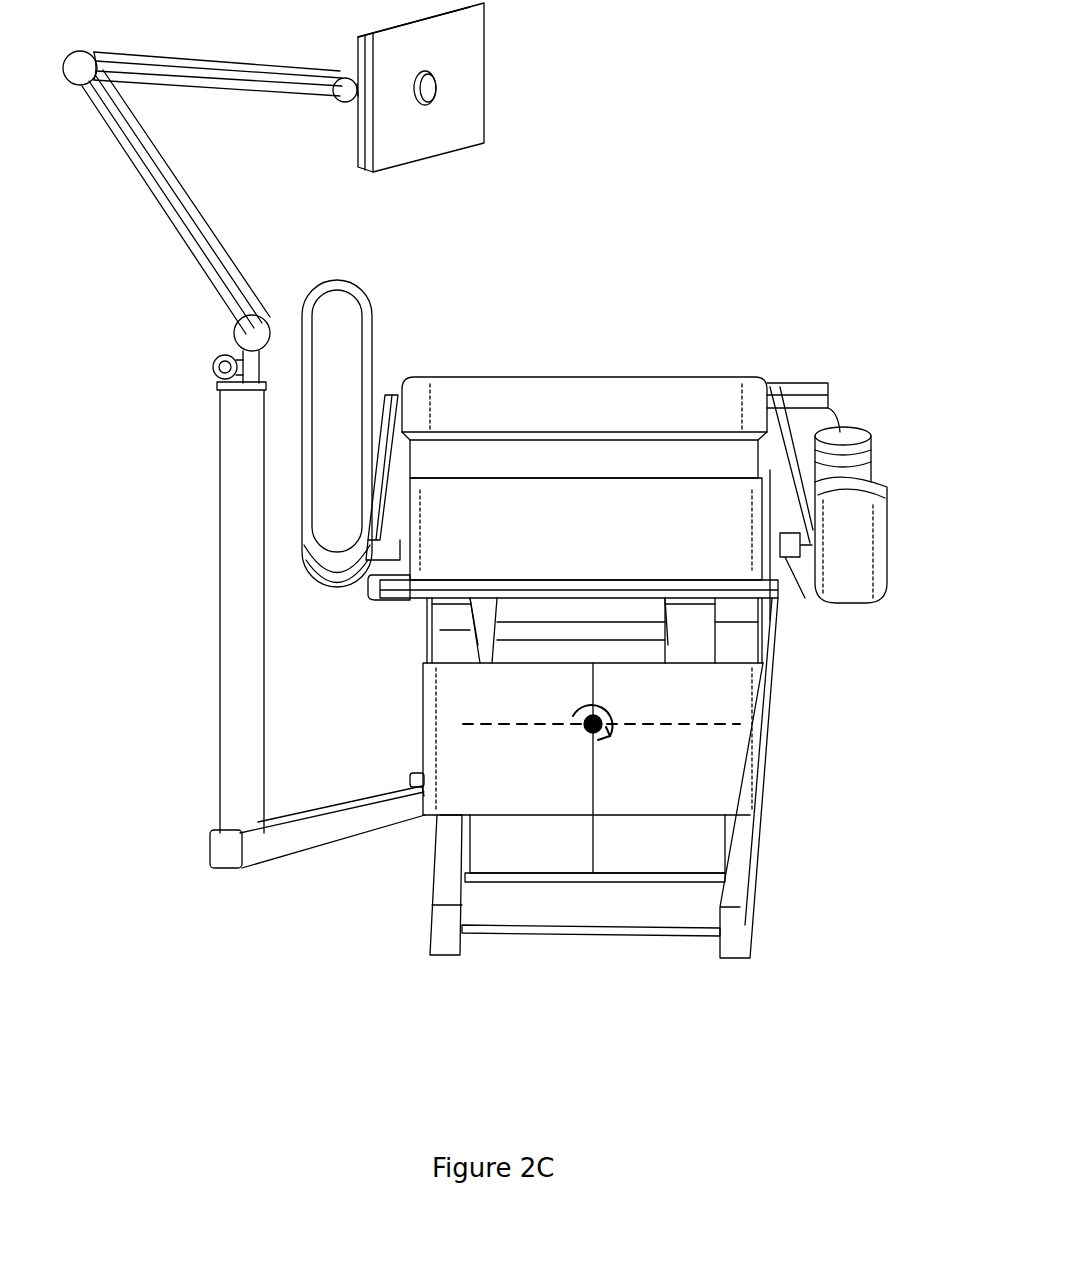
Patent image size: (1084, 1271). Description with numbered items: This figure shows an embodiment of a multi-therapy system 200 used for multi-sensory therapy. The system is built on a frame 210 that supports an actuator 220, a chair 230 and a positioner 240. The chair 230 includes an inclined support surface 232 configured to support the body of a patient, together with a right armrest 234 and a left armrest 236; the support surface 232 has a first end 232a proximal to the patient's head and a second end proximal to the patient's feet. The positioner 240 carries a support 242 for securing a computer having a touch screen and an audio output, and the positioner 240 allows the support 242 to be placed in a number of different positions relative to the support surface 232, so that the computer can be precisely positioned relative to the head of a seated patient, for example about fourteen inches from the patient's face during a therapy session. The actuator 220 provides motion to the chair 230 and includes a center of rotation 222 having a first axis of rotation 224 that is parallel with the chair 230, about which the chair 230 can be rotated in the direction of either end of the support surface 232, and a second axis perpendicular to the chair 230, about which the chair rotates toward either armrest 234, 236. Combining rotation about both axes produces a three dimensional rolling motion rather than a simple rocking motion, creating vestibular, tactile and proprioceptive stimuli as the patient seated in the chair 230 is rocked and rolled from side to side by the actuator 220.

The multi-therapy system 200 is at (799, 139).
The frame 210 is at (450, 882).
The actuator 220 is at (462, 710).
The center of rotation (COR) 222 is at (612, 716).
The first axis of rotation 224 is at (523, 724).
The chair 230 is at (513, 392).
The inclined support surface 232 is at (628, 377).
The first end 232a is at (688, 395).
The right armrest 234 is at (862, 483).
The left armrest 236 is at (352, 343).
The positioner 240 is at (192, 237).
The support 242 is at (455, 118).